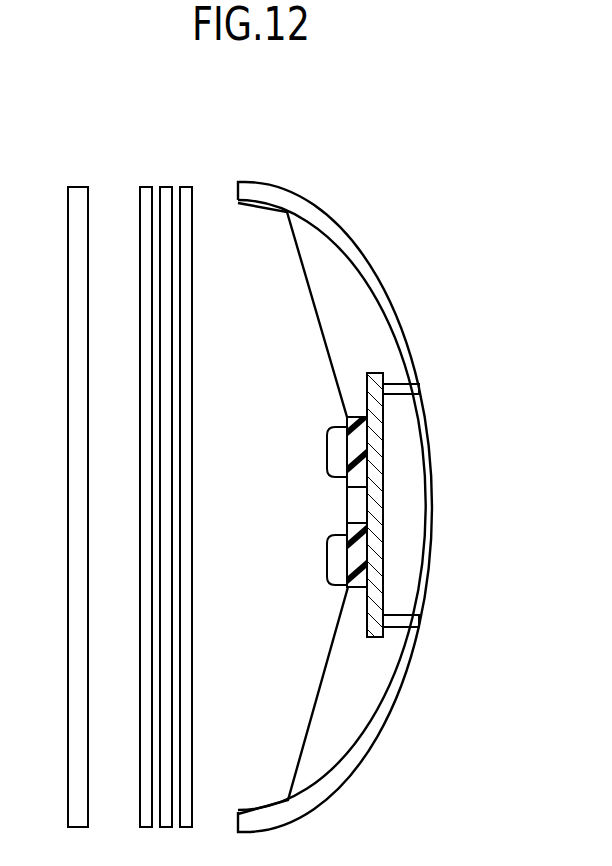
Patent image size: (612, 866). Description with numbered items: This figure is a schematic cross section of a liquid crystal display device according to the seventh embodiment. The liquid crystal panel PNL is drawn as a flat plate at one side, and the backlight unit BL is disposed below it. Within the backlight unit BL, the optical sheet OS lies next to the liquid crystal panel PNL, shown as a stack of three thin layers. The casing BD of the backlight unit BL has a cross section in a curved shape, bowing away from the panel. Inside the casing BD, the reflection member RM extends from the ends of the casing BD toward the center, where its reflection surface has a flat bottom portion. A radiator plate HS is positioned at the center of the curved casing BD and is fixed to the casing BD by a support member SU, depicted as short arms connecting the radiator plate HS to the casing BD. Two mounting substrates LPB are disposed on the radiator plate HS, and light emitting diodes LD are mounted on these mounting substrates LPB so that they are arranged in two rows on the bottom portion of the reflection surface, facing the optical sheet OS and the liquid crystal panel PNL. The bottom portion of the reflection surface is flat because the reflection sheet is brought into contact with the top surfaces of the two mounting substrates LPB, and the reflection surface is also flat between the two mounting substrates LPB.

The liquid crystal panel PNL is at (78, 187).
The optical sheet OS is at (195, 175).
The backlight unit BL is at (433, 120).
The reflection member RM is at (300, 260).
The casing BD is at (342, 226).
The mounting substrate LPB is at (358, 450).
The radiator plate HS is at (370, 377).
The light emitting diode LD is at (327, 452).
The support member SU is at (397, 617).